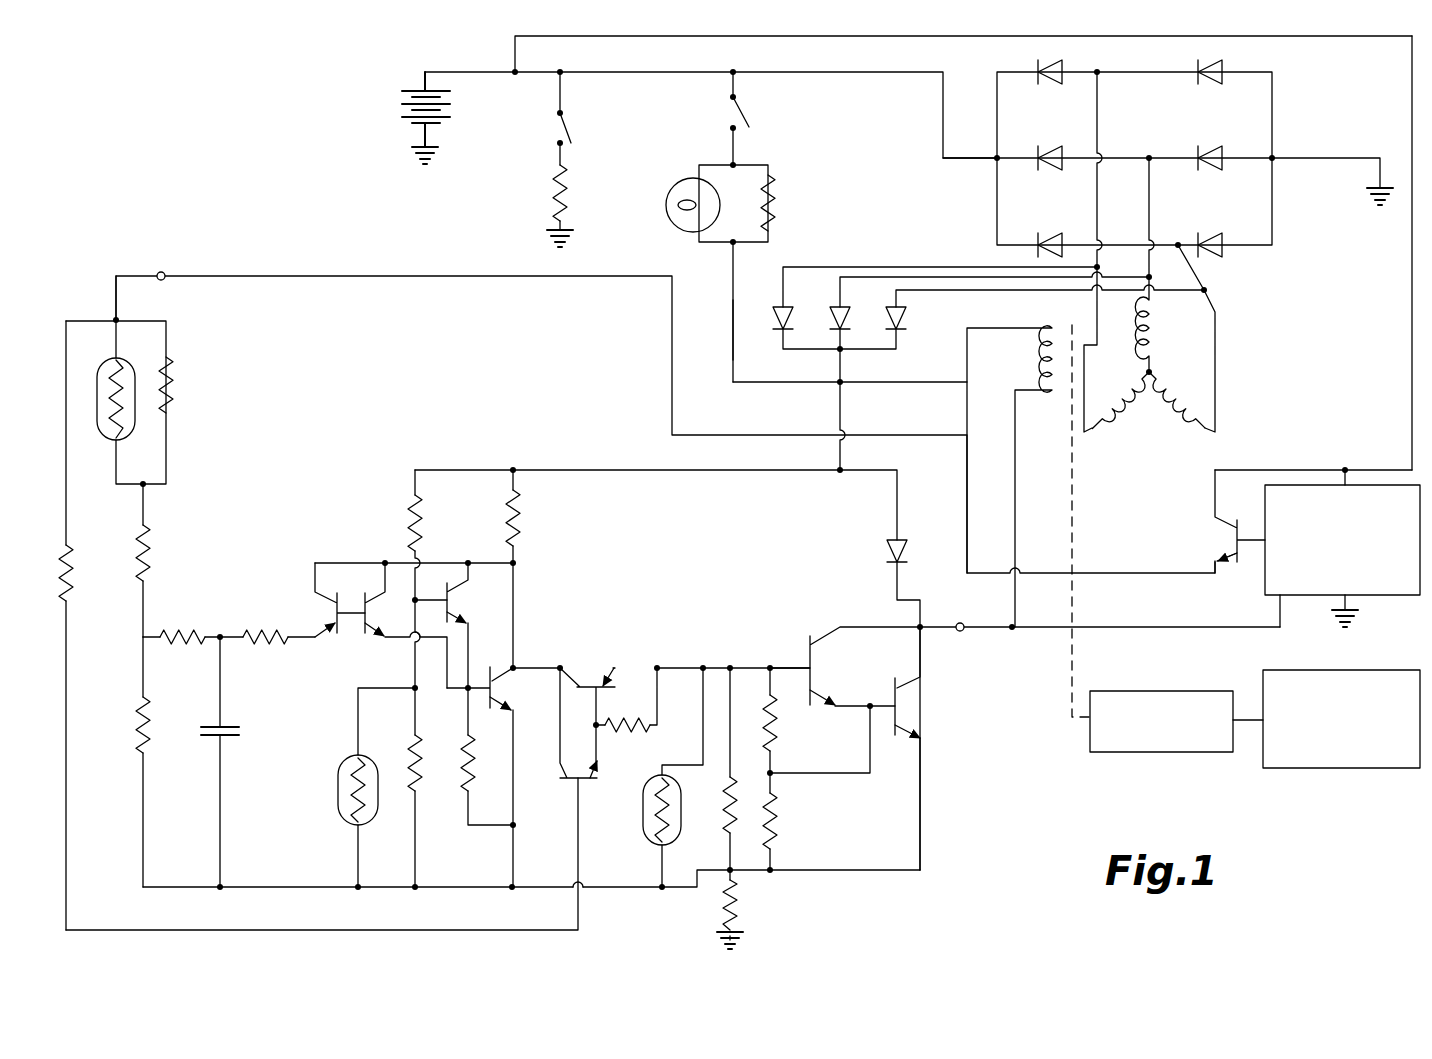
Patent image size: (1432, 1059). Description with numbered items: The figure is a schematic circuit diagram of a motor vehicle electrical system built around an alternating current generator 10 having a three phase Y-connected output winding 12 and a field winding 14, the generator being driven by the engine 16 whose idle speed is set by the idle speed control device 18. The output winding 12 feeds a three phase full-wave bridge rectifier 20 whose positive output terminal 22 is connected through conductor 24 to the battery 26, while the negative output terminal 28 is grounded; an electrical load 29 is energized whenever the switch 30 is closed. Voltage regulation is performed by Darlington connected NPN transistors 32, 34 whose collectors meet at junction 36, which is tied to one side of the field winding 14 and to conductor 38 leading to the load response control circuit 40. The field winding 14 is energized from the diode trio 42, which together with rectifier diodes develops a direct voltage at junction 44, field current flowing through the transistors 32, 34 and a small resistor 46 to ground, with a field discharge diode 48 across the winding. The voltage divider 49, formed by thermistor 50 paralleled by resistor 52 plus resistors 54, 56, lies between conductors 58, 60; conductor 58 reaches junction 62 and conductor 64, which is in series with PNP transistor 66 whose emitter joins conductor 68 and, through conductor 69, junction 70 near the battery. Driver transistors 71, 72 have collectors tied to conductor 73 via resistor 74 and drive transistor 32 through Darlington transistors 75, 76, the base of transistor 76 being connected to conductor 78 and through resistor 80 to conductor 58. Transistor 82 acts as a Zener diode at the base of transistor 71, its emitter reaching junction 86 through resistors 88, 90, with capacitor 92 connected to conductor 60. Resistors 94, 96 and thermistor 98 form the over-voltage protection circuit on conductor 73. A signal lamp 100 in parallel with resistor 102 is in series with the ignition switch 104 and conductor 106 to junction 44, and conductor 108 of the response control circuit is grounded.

The alternating current generator 10 is at (1077, 332).
The output winding 12 is at (1149, 388).
The field winding 14 is at (1047, 343).
The motor vehicle engine 16 is at (1200, 753).
The idle speed control device 18 is at (1298, 770).
The three phase full-wave bridge rectifier 20 is at (1286, 112).
The positive output terminal 22 is at (990, 165).
The conductor 24 is at (615, 74).
The motor vehicle battery 26 is at (412, 115).
The negative output terminal 28 is at (1275, 158).
The electrical load 29 is at (567, 207).
The switch 30 is at (556, 128).
The NPN transistor 32 is at (818, 688).
The NPN transistor 34 is at (900, 722).
The junction 36 is at (961, 632).
The conductor 38 is at (1128, 626).
The load response control circuit 40 is at (1304, 598).
The diodes 42 is at (893, 305).
The junction 44 is at (845, 386).
The resistor 46 is at (737, 895).
The field discharge diode 48 is at (885, 553).
The voltage divider 49 is at (176, 502).
The thermistor 50 is at (103, 430).
The resistor 52 is at (170, 398).
The resistor 54 is at (150, 560).
The resistor 56 is at (147, 728).
The conductor 58 is at (114, 305).
The conductor 60 is at (310, 886).
The junction 62 is at (166, 272).
The conductor 64 is at (388, 276).
The PNP transistor 66 is at (1225, 530).
The conductor 68 is at (1365, 445).
The conductor 69 is at (1411, 255).
The junction 70 is at (514, 68).
The transistor 71 is at (372, 640).
The transistor 72 is at (500, 700).
The conductor 73 is at (675, 470).
The resistor 74 is at (520, 522).
The transistor 75 is at (585, 668).
The transistor 76 is at (576, 780).
The conductor 78 is at (378, 930).
The resistor 80 is at (72, 578).
The NPN transistor 82 is at (322, 630).
The junction 86 is at (145, 633).
The resistor 88 is at (176, 643).
The resistor 90 is at (270, 643).
The capacitor 92 is at (230, 736).
The resistor 94 is at (421, 512).
The resistor 96 is at (420, 770).
The thermistor 98 is at (340, 783).
The signal lamp 100 is at (672, 200).
The resistor 102 is at (776, 205).
The ignition switch 104 is at (752, 112).
The conductor 106 is at (733, 335).
The conductor 108 is at (1355, 617).